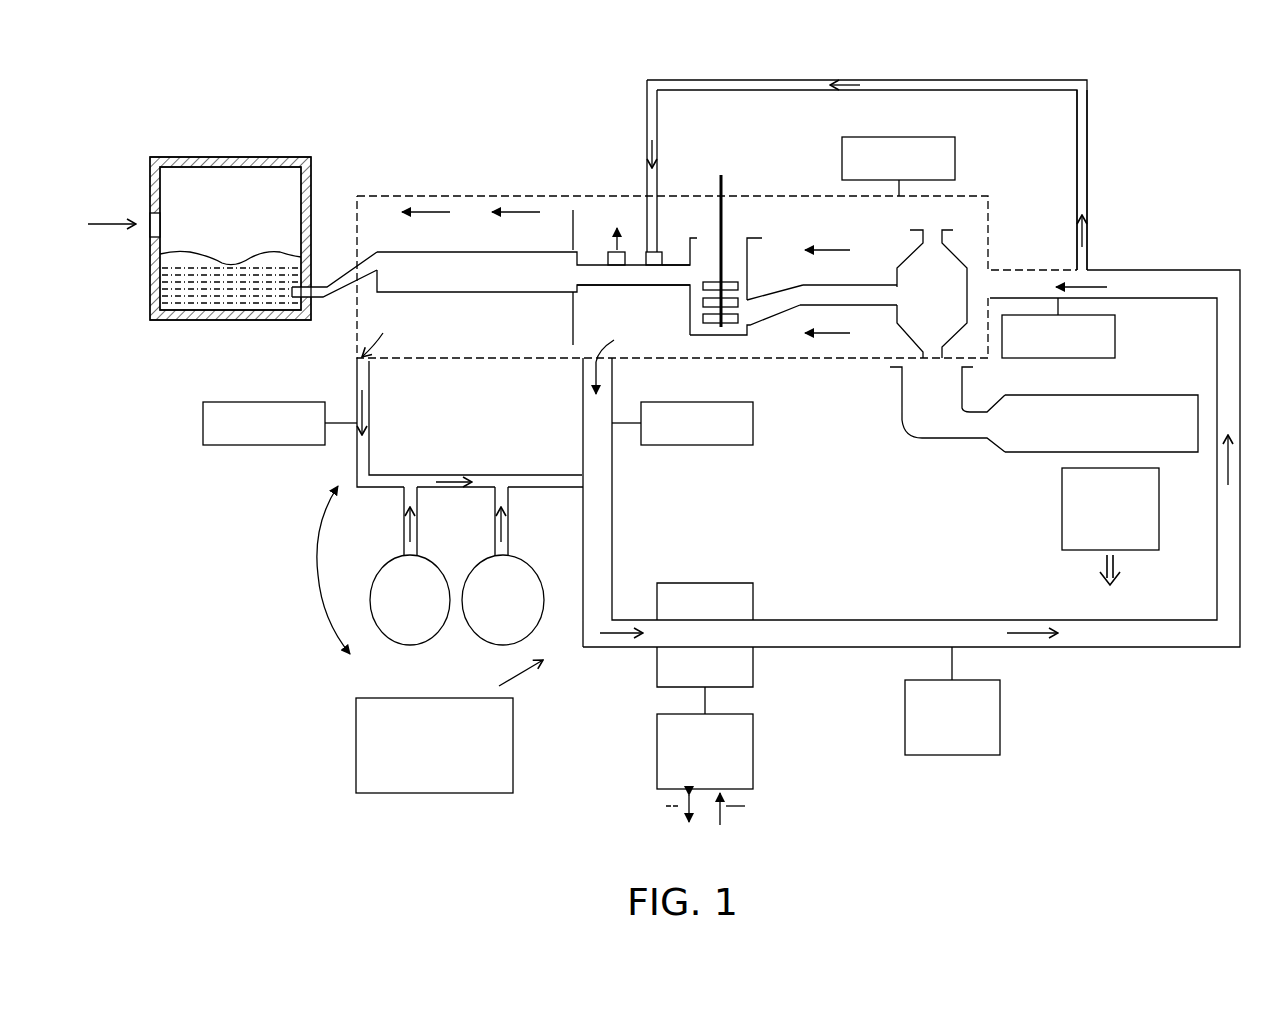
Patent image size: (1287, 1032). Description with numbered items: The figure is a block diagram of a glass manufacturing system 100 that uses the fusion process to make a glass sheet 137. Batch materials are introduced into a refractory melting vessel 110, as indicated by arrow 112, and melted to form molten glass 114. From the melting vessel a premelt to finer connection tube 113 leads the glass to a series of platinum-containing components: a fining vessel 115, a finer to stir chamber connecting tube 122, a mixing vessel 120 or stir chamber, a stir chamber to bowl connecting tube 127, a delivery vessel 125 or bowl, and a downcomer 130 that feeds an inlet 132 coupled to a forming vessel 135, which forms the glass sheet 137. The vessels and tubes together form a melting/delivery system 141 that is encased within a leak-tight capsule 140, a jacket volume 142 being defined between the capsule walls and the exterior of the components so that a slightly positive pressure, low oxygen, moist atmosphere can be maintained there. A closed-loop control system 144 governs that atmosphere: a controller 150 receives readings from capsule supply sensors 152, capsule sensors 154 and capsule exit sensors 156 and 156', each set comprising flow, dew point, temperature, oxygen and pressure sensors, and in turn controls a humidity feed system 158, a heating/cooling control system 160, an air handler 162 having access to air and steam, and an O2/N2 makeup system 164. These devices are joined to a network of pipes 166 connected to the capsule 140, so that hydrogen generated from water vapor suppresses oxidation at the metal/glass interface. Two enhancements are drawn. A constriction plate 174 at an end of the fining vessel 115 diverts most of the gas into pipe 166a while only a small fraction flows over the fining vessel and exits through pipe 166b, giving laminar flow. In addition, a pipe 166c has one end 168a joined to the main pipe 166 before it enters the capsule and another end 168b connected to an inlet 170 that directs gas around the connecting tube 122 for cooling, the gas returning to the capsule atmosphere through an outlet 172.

The glass manufacturing system 100 is at (1205, 68).
The melting vessel 110 is at (228, 157).
The arrow 112 is at (95, 228).
The premelt to finer connection tube 113 is at (333, 300).
The molten glass 114 is at (210, 255).
The fining vessel 115 is at (467, 250).
The mixing vessel 120 is at (703, 336).
The finer to stir chamber connecting tube 122 is at (620, 286).
The delivery vessel 125 is at (908, 254).
The stir chamber to bowl connecting tube 127 is at (833, 287).
The downcomer 130 is at (921, 352).
The inlet 132 is at (900, 410).
The forming vessel 135 is at (1095, 396).
The glass sheet 137 is at (1060, 516).
The capsule 140 is at (416, 195).
The melting/delivery system 141 is at (928, 220).
The jacket volume 142 is at (492, 330).
The closed-loop control system 144 is at (310, 577).
The controller 150 is at (513, 748).
The capsule supply sensors 152 is at (1116, 336).
The capsule sensors 154 is at (957, 158).
The capsule exit sensors 156 is at (709, 423).
The capsule exit sensors 156' is at (251, 423).
The humidity feed system 158 is at (1001, 718).
The heating/cooling control system 160 is at (754, 753).
The air handler 162 is at (708, 583).
The O2/N2 makeup system 164 is at (412, 645).
The network of pipes 166 is at (1165, 271).
The pipe 166a is at (582, 392).
The pipe 166b is at (369, 392).
The pipe 166c is at (975, 80).
The end of pipe 166c 168a is at (1075, 266).
The end of pipe 166c 168b is at (645, 252).
The inlet 170 is at (662, 252).
The outlet 172 is at (610, 252).
The constriction plate 174 is at (573, 222).